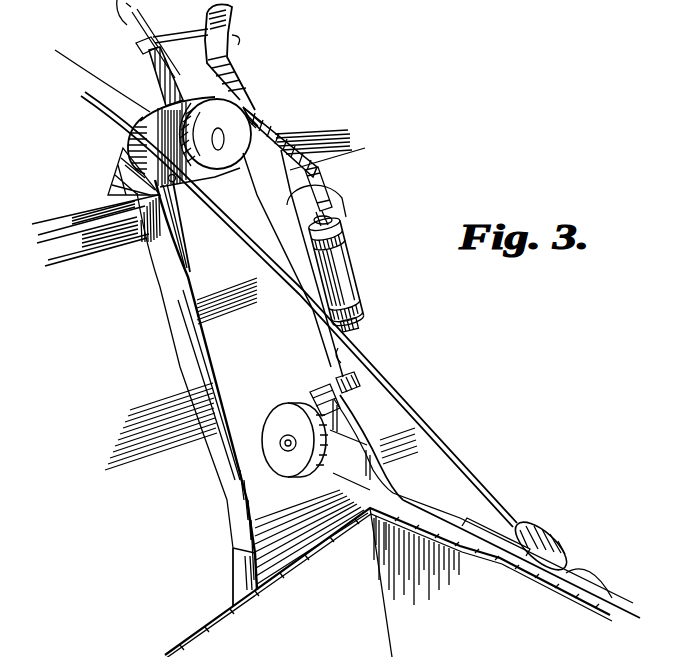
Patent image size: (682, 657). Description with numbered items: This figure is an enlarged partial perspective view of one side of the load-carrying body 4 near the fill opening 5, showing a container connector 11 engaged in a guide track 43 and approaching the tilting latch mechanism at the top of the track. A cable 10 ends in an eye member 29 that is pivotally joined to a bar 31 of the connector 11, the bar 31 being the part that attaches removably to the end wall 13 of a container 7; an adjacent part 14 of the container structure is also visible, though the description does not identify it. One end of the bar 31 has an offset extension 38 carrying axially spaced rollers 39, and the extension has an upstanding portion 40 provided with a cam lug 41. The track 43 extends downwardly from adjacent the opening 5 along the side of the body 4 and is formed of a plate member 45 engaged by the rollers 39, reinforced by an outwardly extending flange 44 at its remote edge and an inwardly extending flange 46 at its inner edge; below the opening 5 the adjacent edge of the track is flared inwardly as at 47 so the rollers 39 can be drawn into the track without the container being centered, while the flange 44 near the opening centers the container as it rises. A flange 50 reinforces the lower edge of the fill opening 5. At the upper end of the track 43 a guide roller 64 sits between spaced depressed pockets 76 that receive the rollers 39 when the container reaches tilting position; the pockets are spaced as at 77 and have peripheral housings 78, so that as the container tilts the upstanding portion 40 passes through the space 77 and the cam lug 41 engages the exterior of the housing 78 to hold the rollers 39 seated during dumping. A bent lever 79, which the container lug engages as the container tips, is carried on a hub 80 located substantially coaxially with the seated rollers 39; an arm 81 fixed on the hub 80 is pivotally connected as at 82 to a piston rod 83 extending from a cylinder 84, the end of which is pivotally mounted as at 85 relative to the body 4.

The load-carrying body 4 is at (323, 138).
The fill opening 5 is at (50, 207).
The container 7 is at (237, 618).
The cable 10 is at (407, 400).
The connector 11 is at (571, 575).
The end wall 13 is at (530, 597).
The support 14 is at (293, 607).
The eye member 29 is at (548, 548).
The bar 31 is at (465, 519).
The offset extension 38 is at (393, 465).
The roller 39 is at (274, 422).
The upstanding portion 40 is at (356, 374).
The cam lug 41 is at (312, 385).
The track 43 is at (250, 515).
The outwardly extending flange 44 is at (360, 348).
The plate member 45 is at (222, 333).
The inwardly extending flange 46 is at (227, 455).
The inwardly flared edge 47 is at (245, 573).
The flange 50 is at (91, 212).
The guide roller 64 is at (190, 190).
The depressed pocket 76 is at (229, 172).
The space 77 is at (188, 100).
The peripheral housing 78 is at (162, 107).
The lever 79 is at (232, 22).
The hub 80 is at (248, 106).
The arm 81 is at (278, 142).
The pivotal connection 82 is at (323, 173).
The piston rod 83 is at (328, 208).
The cylinder 84 is at (347, 270).
The pivotal mounting 85 is at (349, 327).